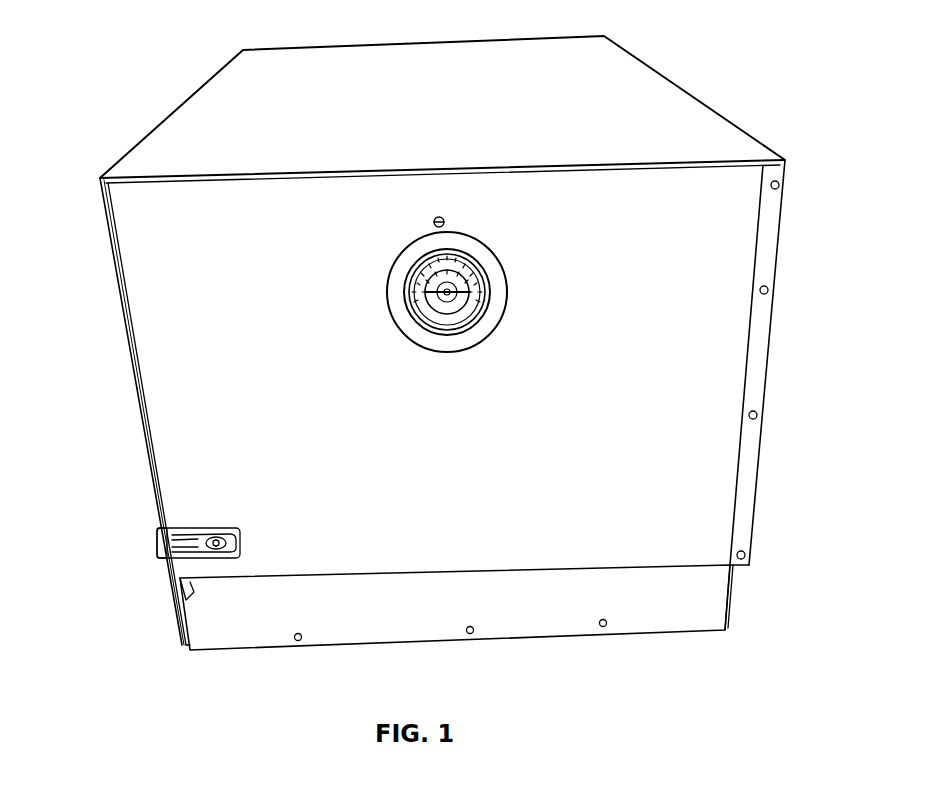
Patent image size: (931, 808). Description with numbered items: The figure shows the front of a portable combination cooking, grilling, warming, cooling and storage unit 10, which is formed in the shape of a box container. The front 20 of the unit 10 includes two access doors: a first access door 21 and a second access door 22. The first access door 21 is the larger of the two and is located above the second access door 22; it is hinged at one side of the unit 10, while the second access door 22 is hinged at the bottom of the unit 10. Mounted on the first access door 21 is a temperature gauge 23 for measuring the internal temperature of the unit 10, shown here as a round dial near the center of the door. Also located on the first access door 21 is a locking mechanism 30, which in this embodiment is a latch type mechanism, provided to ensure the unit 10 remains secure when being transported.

The portable combination cooking, grilling, warming, cooling and storage unit 10 is at (124, 62).
The front 20 is at (279, 411).
The first access door 21 is at (150, 290).
The second access door 22 is at (200, 618).
The temperature gauge 23 is at (493, 305).
The locking mechanism 30 is at (165, 547).